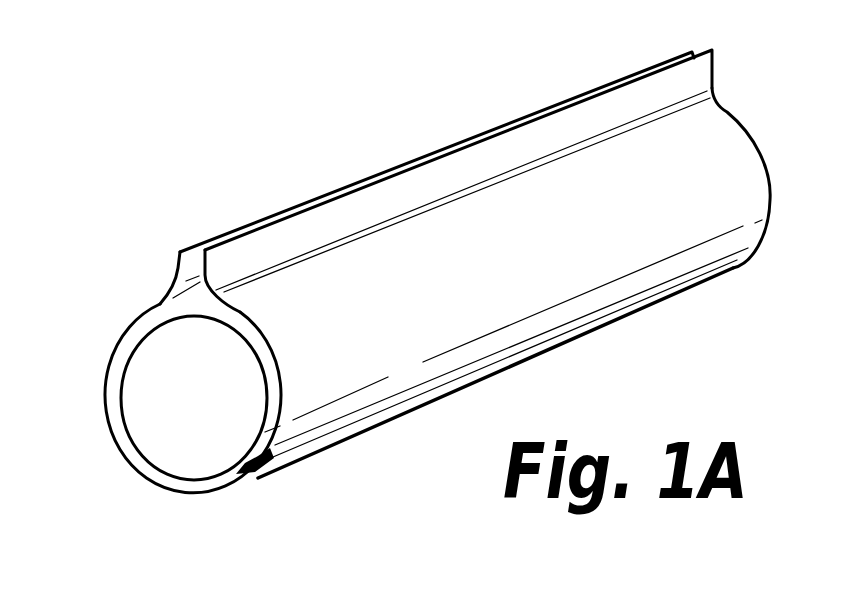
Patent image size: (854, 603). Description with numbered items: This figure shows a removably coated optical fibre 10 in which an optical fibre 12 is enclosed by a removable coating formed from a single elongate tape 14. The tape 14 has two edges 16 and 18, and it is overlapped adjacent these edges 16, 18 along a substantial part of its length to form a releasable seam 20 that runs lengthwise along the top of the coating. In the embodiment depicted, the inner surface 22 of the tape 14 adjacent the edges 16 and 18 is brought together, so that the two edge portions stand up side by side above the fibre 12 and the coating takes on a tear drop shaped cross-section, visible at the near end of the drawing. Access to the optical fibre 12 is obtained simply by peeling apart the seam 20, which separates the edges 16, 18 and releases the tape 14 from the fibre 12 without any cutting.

The removably coated optical fibre 10 is at (428, 436).
The optical fibre 12 is at (193, 443).
The elongate tape 14 is at (612, 160).
The edge of the tape 16 is at (363, 177).
The edge of the tape 18 is at (383, 177).
The releasable seam 20 is at (197, 222).
The inner surface of the tape 22 is at (121, 420).